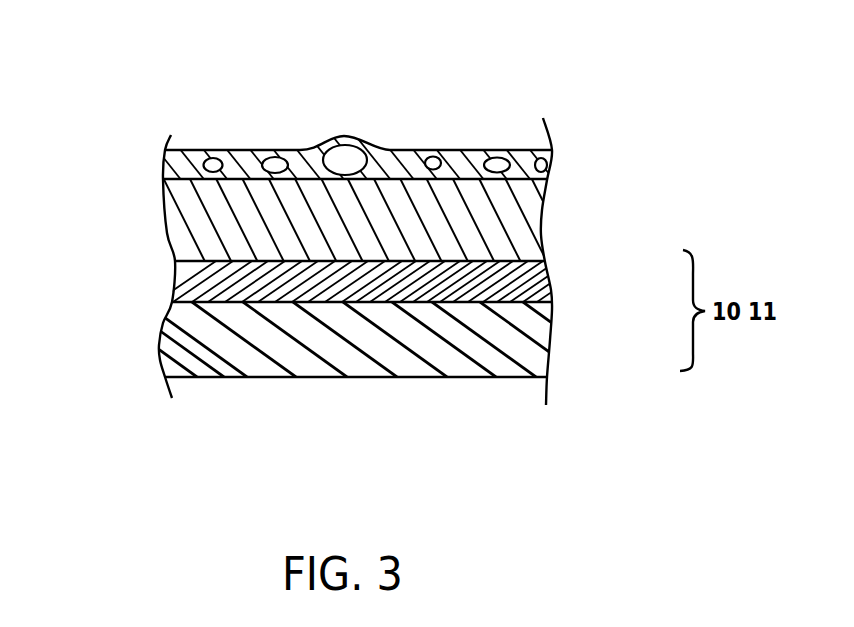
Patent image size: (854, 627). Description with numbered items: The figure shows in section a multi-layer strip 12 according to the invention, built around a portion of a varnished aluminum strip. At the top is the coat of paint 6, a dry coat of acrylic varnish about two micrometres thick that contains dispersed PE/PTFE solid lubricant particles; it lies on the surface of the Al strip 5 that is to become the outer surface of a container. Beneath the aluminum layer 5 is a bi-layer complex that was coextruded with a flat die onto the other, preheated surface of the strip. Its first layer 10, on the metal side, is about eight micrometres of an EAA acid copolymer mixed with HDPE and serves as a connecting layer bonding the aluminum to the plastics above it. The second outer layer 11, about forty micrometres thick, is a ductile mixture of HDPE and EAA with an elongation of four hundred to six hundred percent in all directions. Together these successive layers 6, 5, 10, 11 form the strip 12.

The Al strip 5 is at (497, 223).
The dry coat of varnish 6 is at (548, 155).
The first layer 10 is at (521, 283).
The second outer layer 11 is at (520, 350).
The multi-layer strip 12 is at (142, 353).